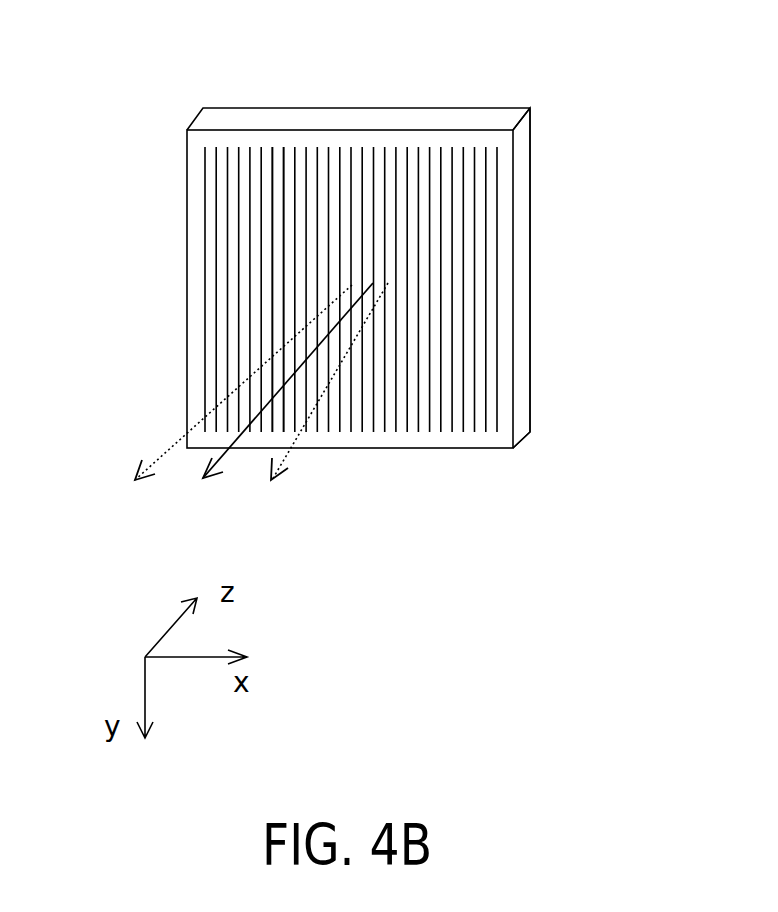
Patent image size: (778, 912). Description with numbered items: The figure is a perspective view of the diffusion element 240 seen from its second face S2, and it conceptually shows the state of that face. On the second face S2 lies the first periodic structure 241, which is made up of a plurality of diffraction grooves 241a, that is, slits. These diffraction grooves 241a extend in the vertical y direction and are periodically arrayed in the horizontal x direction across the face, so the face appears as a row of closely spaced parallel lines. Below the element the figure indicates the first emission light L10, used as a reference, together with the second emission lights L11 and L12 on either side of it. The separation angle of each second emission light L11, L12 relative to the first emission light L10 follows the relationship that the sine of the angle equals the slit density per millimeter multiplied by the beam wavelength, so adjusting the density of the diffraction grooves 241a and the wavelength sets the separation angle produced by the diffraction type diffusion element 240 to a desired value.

The diffusion element 240 is at (502, 95).
The first periodic structure 241 is at (345, 134).
The diffraction groove 241a is at (283, 188).
The second face S2 is at (505, 252).
The first emission light L10 is at (227, 457).
The second emission light L11 is at (168, 450).
The second emission light L12 is at (285, 457).